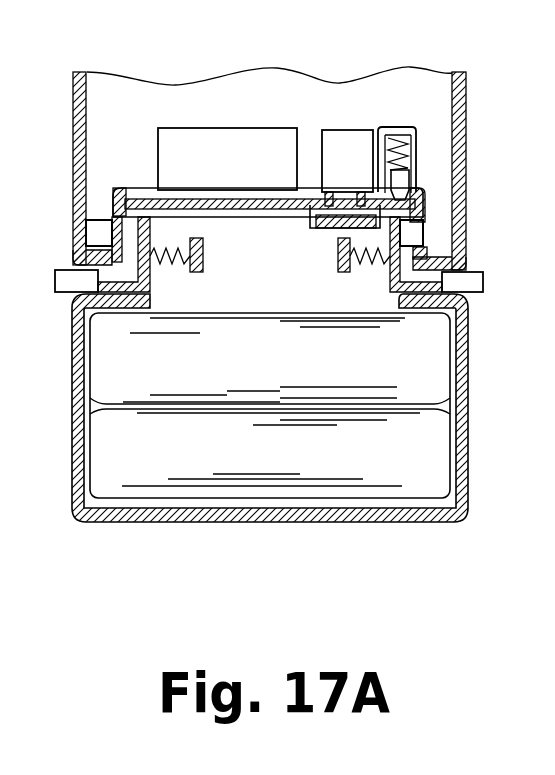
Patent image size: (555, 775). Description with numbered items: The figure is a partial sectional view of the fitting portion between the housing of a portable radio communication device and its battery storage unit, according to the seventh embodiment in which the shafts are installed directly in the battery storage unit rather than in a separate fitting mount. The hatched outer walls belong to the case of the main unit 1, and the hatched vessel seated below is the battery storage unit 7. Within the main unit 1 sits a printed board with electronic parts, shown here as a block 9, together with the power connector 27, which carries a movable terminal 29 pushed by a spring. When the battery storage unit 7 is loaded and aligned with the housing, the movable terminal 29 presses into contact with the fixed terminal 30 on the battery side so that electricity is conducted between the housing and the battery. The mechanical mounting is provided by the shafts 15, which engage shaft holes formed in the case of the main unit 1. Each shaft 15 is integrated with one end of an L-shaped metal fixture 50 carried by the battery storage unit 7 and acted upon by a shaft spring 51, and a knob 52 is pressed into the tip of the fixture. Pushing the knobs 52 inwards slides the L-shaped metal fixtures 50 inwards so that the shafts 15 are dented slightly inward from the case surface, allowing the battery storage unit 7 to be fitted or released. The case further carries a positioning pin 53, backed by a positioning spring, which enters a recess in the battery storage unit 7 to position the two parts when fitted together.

The main unit 1 is at (479, 112).
The battery storage unit 7 is at (168, 523).
The component block 9 is at (186, 140).
The shaft 15 is at (420, 237).
The power connector 27 is at (357, 122).
The movable terminal 29 is at (350, 183).
The fixed terminal 30 is at (340, 215).
The L-shaped metal fixture 50 is at (150, 292).
The shaft spring 51 is at (455, 335).
The knob 52 is at (483, 288).
The positioning pin 53 is at (403, 178).